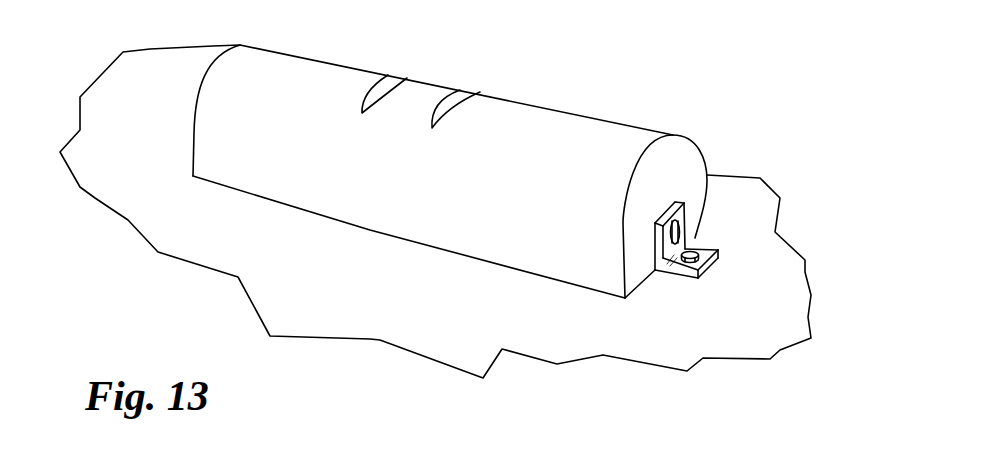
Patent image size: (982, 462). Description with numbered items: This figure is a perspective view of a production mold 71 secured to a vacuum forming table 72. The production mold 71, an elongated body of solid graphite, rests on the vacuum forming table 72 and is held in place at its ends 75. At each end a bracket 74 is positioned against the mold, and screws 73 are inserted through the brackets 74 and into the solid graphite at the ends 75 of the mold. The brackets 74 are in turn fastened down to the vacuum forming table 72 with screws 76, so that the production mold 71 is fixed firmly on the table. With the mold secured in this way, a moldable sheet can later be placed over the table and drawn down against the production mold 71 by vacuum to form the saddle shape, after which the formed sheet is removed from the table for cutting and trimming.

The production mold 71 is at (473, 150).
The vacuum forming table 72 is at (330, 284).
The screws 73 is at (681, 229).
The brackets 74 is at (736, 297).
The ends of the mold 75 is at (692, 160).
The screws 76 is at (700, 247).